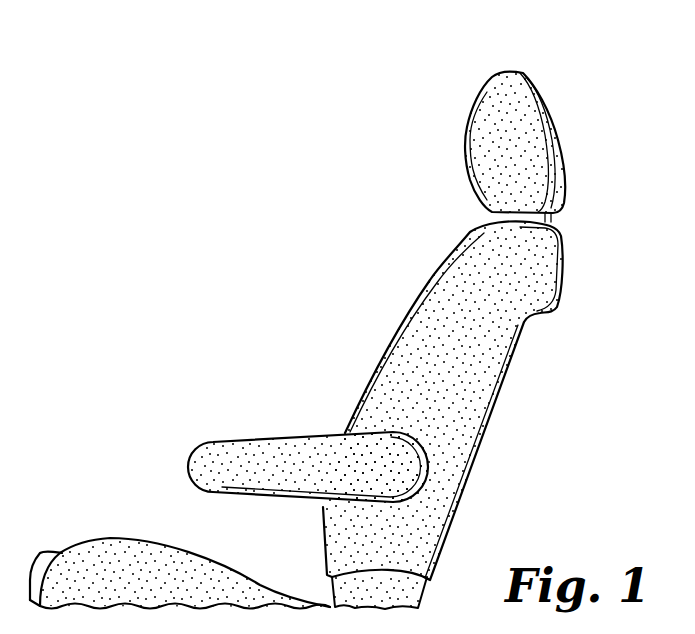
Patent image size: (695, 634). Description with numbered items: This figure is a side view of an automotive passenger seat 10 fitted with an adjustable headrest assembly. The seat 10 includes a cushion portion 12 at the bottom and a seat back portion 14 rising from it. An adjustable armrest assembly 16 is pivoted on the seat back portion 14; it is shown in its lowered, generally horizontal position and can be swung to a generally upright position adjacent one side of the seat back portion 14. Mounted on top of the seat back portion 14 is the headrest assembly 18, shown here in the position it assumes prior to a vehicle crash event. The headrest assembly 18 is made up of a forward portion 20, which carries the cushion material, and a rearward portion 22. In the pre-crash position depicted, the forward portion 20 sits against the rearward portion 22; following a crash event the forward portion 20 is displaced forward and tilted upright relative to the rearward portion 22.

The automotive passenger seat 10 is at (456, 553).
The cushion portion 12 is at (117, 538).
The seat back portion 14 is at (500, 397).
The adjustable armrest assembly 16 is at (277, 438).
The headrest assembly 18 is at (552, 103).
The forward portion 20 is at (463, 140).
The rearward portion 22 is at (567, 172).